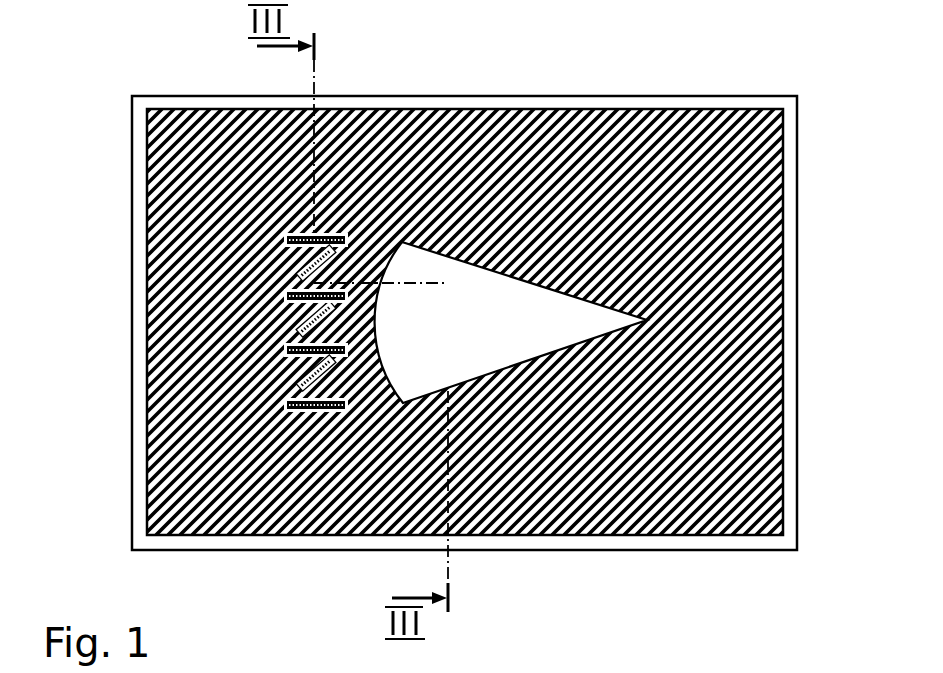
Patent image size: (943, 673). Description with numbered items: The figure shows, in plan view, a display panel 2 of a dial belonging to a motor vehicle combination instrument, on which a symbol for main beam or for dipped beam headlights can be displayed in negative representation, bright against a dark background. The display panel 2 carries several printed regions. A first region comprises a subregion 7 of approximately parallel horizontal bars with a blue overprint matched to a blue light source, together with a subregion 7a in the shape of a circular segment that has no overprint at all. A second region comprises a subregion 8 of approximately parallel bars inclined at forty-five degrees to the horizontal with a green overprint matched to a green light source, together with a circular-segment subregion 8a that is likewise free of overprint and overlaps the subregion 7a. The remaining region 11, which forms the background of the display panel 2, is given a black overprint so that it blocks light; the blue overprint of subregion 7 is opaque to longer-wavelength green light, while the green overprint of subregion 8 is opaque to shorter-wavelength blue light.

The display panel 2 is at (730, 97).
The subregion of the first region 7 is at (307, 237).
The subregion of the second region 8 is at (307, 290).
The circular-segment subregion of the first region 7a is at (519, 208).
The circular-segment subregion of the second region 8a is at (535, 305).
The remaining region 11 is at (712, 248).